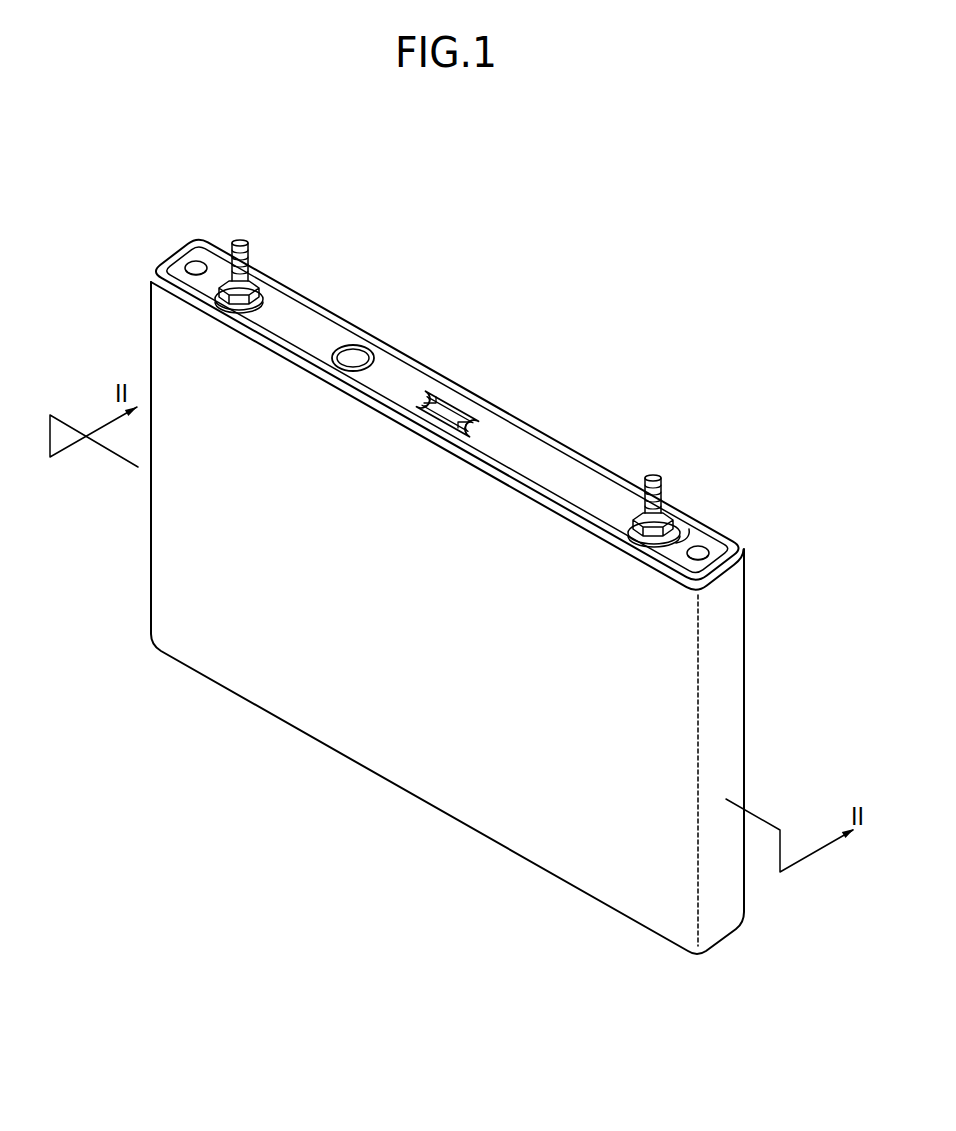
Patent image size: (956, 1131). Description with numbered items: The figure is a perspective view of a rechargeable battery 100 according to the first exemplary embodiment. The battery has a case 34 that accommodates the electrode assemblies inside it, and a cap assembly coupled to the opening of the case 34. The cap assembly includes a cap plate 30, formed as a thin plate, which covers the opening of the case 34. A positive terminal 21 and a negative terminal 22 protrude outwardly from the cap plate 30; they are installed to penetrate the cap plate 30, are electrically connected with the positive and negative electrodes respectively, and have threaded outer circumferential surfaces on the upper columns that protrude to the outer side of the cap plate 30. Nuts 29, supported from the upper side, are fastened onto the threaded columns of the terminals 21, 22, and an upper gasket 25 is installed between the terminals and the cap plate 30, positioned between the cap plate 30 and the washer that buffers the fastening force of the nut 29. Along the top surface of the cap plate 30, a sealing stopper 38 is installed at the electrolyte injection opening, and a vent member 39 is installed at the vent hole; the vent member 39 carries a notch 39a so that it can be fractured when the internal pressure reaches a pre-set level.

The rechargeable battery 100 is at (550, 403).
The positive terminal 21 is at (240, 243).
The negative terminal 22 is at (653, 478).
The upper gasket 25 is at (684, 537).
The nut 29 is at (668, 515).
The cap plate 30 is at (408, 360).
The case 34 is at (368, 728).
The sealing stopper 38 is at (352, 355).
The vent member 39 is at (444, 405).
The notch 39a is at (455, 412).